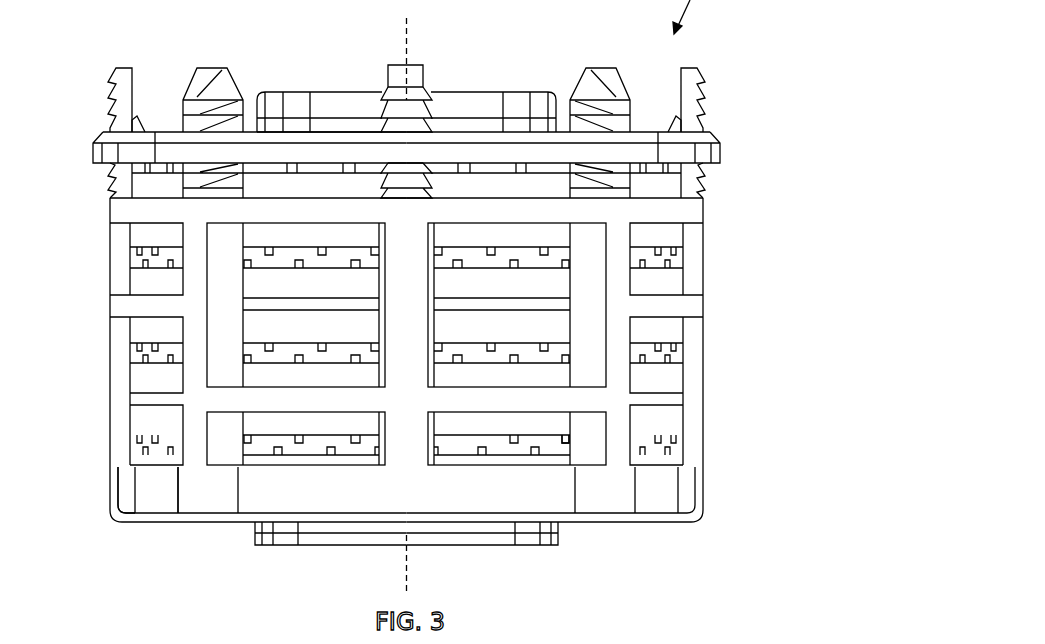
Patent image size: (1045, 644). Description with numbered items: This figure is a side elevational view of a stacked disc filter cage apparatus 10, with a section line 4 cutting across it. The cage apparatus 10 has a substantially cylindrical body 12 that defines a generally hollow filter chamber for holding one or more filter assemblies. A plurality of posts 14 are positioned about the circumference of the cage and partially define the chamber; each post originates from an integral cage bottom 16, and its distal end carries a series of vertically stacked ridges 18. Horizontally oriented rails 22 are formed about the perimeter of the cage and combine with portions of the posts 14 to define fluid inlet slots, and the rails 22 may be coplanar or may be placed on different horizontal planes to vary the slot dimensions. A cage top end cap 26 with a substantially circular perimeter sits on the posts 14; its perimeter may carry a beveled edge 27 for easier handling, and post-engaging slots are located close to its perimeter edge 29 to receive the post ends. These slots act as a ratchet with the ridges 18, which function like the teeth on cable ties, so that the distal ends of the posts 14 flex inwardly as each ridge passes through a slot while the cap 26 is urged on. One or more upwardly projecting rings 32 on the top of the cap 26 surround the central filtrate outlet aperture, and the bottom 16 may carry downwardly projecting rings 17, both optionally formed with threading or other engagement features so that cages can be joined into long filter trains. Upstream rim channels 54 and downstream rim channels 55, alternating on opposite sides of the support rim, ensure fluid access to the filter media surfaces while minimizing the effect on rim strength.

The stacked disc filter cage apparatus 10 is at (652, 643).
The substantially cylindrical body 12 is at (120, 495).
The posts 14 is at (692, 390).
The integral cage bottom 16 is at (168, 498).
The rings 17 is at (318, 538).
The vertically stacked ridges 18 is at (118, 100).
The horizontally oriented rails 22 is at (147, 307).
The cage top end cap 26 is at (290, 147).
The beveled edge 27 is at (712, 136).
The perimeter edge 29 is at (722, 155).
The upwardly projecting rings 32 is at (541, 100).
The upstream rim channels 54 is at (515, 442).
The downstream rim channels 55 is at (537, 452).
The section line 4- 4 is at (420, 36).